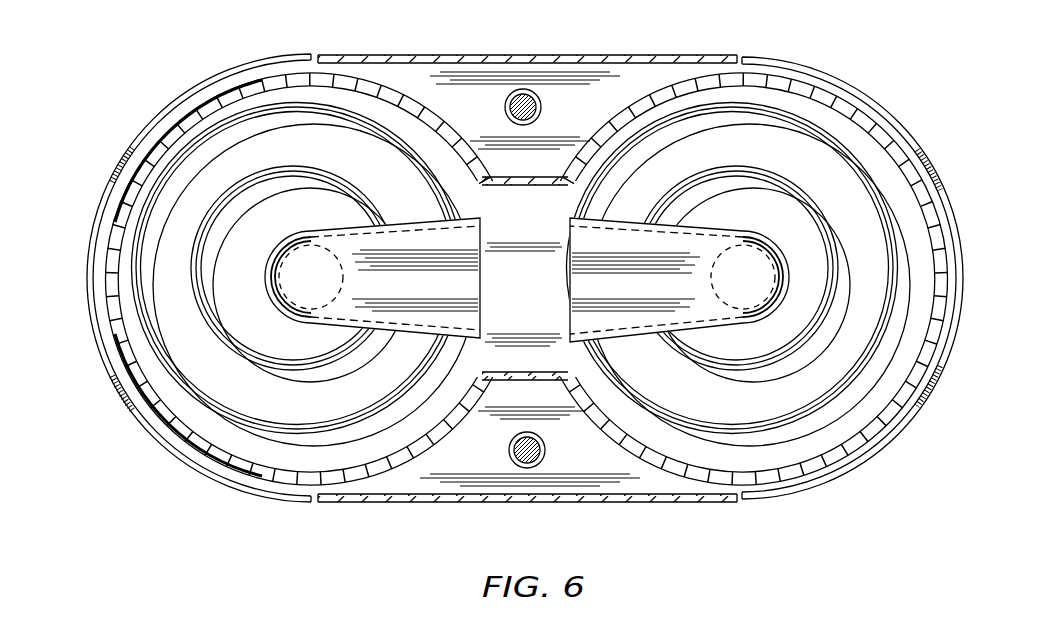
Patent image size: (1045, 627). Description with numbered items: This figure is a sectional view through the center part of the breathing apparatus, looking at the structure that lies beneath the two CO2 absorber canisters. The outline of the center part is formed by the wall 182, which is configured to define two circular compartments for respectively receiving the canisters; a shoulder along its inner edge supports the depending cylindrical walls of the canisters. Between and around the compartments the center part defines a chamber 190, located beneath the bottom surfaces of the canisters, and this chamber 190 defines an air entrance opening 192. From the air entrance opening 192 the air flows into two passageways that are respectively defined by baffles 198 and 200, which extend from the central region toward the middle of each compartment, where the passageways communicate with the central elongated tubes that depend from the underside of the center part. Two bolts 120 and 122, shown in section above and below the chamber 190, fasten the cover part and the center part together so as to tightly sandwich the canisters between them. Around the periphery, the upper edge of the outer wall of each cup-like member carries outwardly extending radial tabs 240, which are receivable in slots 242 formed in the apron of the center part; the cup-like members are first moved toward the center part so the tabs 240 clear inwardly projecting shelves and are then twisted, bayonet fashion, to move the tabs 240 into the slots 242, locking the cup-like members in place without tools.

The bolt 120 is at (523, 88).
The bolt 122 is at (545, 450).
The wall 182 is at (880, 133).
The chamber 190 is at (538, 224).
The air entrance opening 192 is at (538, 312).
The baffle 198 is at (400, 295).
The baffle 200 is at (693, 297).
The radial tab 240 is at (208, 86).
The slot 242 is at (100, 315).